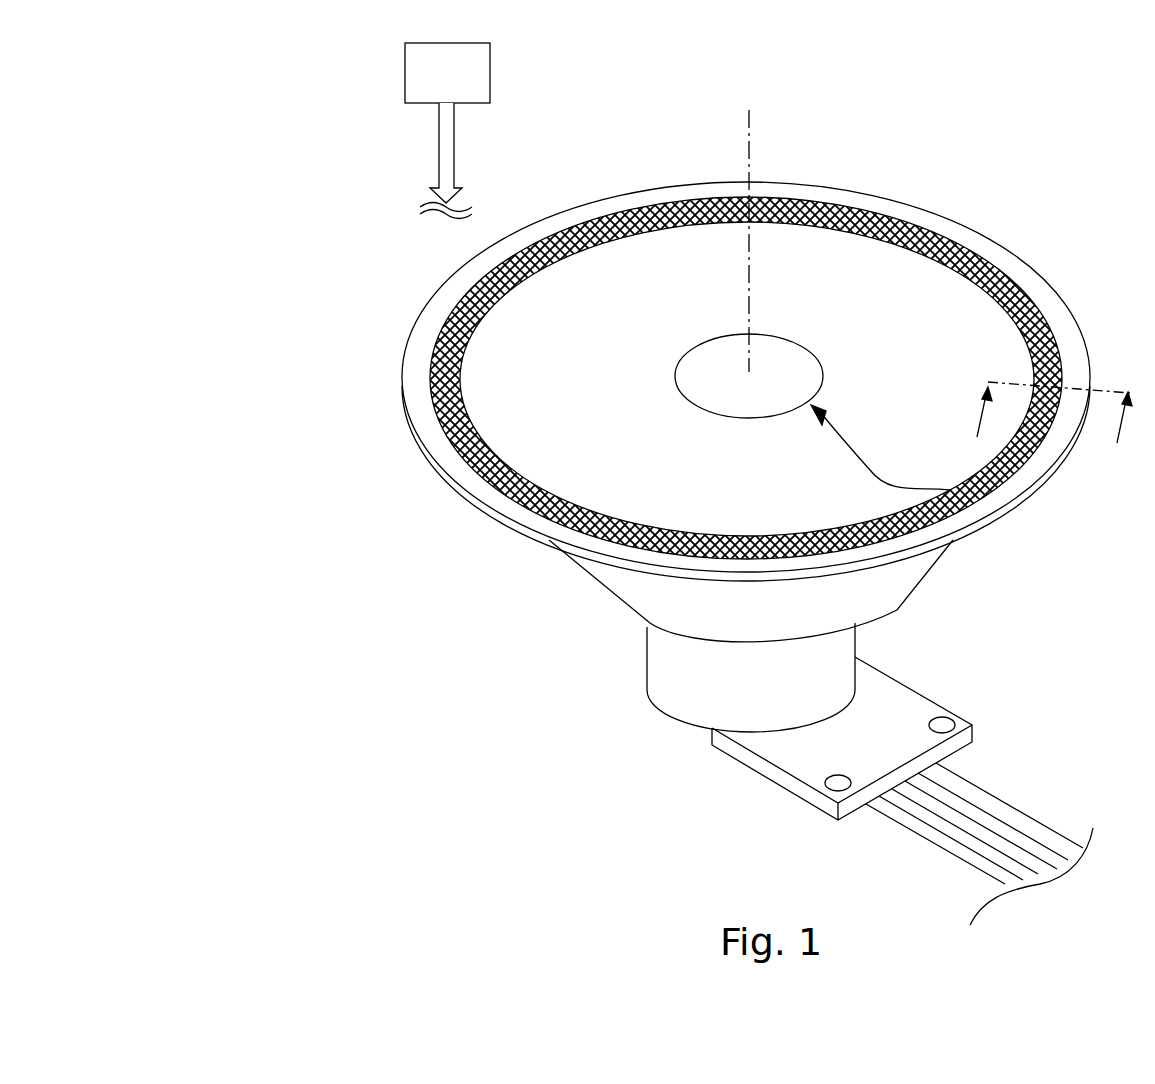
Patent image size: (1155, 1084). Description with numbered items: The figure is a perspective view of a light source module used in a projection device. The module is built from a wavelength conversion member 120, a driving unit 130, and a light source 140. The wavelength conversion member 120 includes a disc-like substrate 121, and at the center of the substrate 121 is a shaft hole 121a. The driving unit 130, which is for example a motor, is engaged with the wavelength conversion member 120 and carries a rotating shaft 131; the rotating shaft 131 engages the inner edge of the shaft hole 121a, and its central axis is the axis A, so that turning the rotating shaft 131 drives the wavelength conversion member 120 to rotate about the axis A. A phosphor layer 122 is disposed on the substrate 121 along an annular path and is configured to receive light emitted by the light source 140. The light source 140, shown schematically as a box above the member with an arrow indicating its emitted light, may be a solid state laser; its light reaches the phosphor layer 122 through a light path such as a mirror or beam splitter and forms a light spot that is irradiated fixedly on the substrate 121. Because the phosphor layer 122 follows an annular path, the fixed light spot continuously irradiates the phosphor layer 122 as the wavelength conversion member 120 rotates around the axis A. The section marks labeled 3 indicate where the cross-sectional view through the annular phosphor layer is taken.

The wavelength conversion member 120 is at (314, 192).
The substrate 121 is at (412, 380).
The shaft hole 121a is at (970, 503).
The phosphor layer 122 is at (440, 342).
The driving unit 130 is at (688, 668).
The rotating shaft 131 is at (783, 365).
The light source 140 is at (409, 72).
The axis A is at (750, 120).
The section line 3- 3 is at (1047, 430).